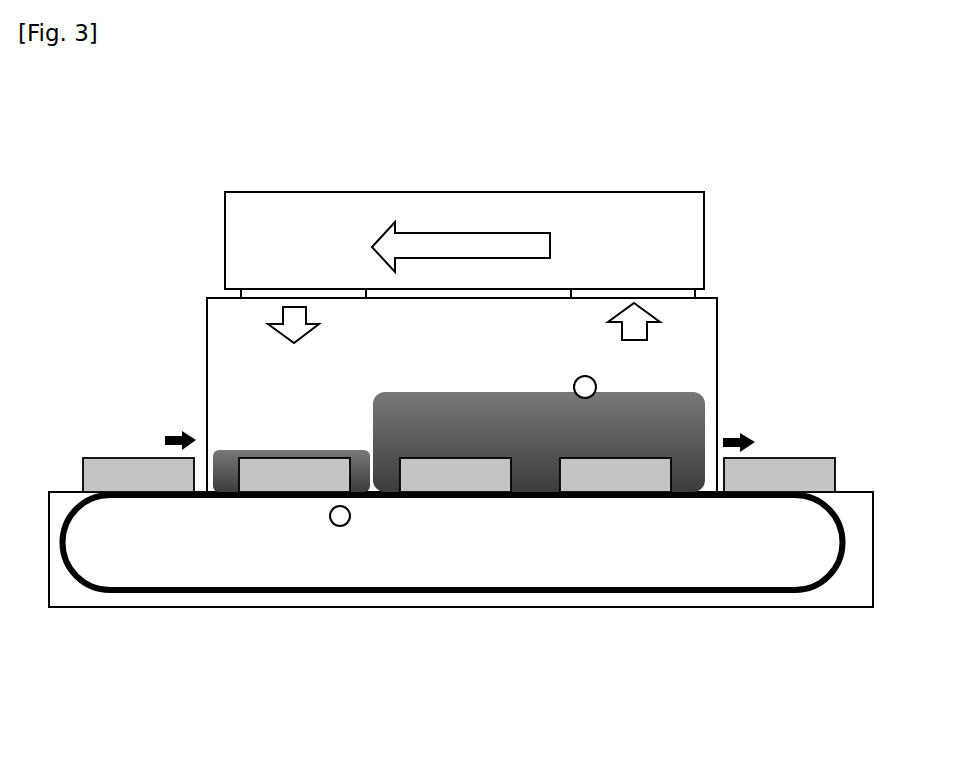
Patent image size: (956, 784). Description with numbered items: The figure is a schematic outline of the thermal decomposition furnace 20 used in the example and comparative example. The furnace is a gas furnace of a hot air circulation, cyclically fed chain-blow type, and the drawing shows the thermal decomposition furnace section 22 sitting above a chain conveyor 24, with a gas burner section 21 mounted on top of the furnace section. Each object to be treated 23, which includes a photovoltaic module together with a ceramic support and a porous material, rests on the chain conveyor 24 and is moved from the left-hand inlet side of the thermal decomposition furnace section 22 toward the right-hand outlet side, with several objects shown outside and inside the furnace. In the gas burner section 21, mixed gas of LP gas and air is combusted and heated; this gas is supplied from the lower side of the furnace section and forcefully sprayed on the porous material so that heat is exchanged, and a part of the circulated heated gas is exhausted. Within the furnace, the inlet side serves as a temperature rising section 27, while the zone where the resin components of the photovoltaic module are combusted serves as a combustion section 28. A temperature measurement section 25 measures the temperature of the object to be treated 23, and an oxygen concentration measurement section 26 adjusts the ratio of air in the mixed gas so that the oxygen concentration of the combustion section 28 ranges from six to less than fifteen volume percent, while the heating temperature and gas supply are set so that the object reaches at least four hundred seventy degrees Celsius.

The thermal decomposition furnace 20 is at (160, 134).
The gas burner section 21 is at (225, 238).
The thermal decomposition furnace section 22 is at (207, 350).
The object to be treated 23 is at (130, 457).
The chain conveyor 24 is at (622, 592).
The temperature measurement section 25 is at (338, 527).
The oxygen concentration measurement section 26 is at (585, 376).
The temperature rising section 27 is at (224, 485).
The combustion section 28 is at (653, 400).